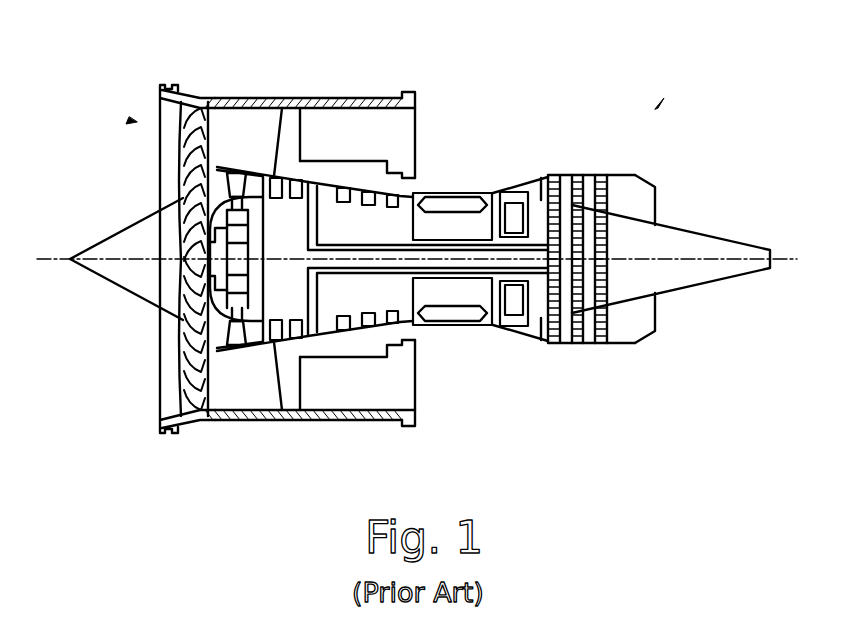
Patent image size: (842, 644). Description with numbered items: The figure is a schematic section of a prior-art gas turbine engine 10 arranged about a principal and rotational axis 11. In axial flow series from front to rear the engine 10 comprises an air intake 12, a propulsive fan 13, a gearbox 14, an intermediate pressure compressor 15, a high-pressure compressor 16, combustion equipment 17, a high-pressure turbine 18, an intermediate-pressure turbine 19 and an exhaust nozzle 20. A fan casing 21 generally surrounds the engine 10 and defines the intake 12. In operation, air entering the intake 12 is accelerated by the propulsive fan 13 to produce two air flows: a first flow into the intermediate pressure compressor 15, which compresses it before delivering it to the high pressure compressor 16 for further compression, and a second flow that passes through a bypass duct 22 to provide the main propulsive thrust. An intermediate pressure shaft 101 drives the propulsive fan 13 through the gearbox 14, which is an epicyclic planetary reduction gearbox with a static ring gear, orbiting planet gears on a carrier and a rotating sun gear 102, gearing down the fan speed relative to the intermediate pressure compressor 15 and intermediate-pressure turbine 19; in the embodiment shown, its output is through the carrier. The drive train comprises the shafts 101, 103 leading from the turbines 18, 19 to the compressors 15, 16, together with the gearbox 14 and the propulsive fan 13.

The gas turbine engine 10 is at (660, 104).
The principal and rotational axis 11 is at (53, 258).
The air intake 12 is at (130, 120).
The propulsive fan 13 is at (185, 352).
The gearbox 14 is at (228, 308).
The intermediate pressure compressor 15 is at (287, 167).
The high-pressure compressor 16 is at (402, 215).
The combustion equipment 17 is at (452, 315).
The high-pressure turbine 18 is at (535, 183).
The intermediate-pressure turbine 19 is at (580, 177).
The exhaust nozzle 20 is at (648, 208).
The fan casing 21 is at (353, 98).
The bypass duct 22 is at (393, 113).
The intermediate pressure shaft 101 is at (333, 268).
The sun gear 102 is at (210, 259).
The shaft 103 is at (495, 190).